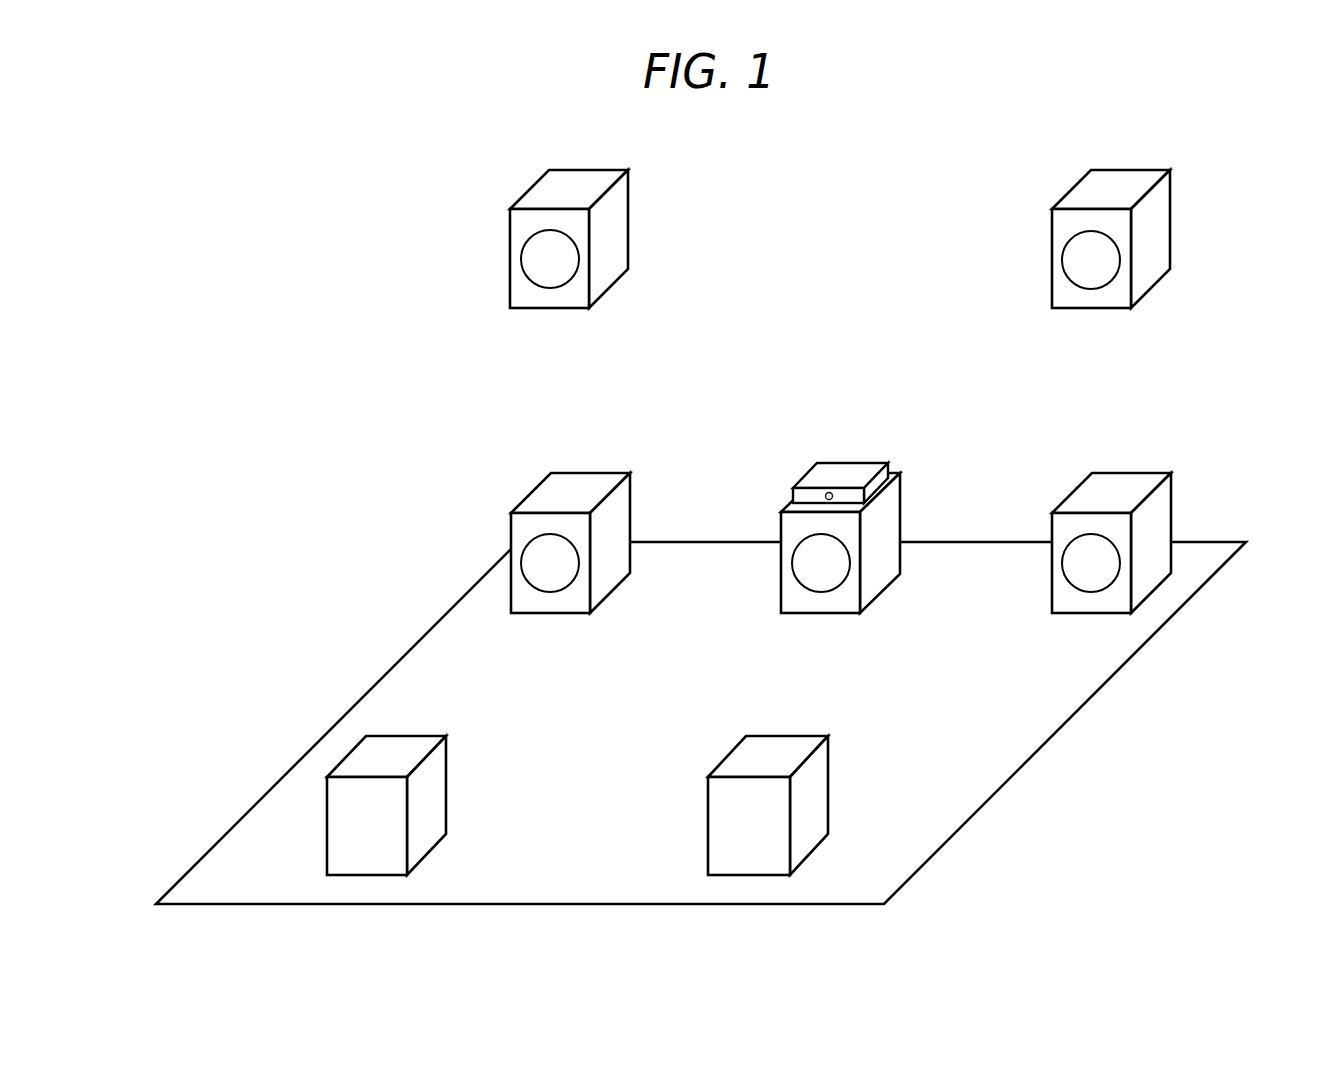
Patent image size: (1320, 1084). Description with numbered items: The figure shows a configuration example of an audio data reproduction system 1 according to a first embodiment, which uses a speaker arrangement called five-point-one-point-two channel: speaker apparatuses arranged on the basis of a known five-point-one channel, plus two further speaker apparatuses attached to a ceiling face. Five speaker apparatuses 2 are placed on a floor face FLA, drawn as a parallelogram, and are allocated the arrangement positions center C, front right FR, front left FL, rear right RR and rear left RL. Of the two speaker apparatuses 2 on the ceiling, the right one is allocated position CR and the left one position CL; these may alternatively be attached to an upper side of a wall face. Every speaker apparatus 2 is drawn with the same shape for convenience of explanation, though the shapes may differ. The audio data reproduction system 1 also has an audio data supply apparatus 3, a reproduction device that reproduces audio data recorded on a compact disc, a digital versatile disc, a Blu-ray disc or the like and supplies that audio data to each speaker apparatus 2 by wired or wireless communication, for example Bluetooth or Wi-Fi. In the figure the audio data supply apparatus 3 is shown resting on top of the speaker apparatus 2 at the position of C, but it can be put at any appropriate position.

The audio data reproduction system 1 is at (850, 172).
The speaker apparatus 2 is at (902, 521).
The audio data supply apparatus 3 is at (822, 462).
The center C is at (902, 495).
The ceiling left CL is at (551, 310).
The ceiling right CR is at (1092, 310).
The front left FL is at (583, 473).
The front right FR is at (1129, 473).
The rear left RL is at (367, 877).
The rear right RR is at (750, 877).
The floor face FLA is at (1092, 695).